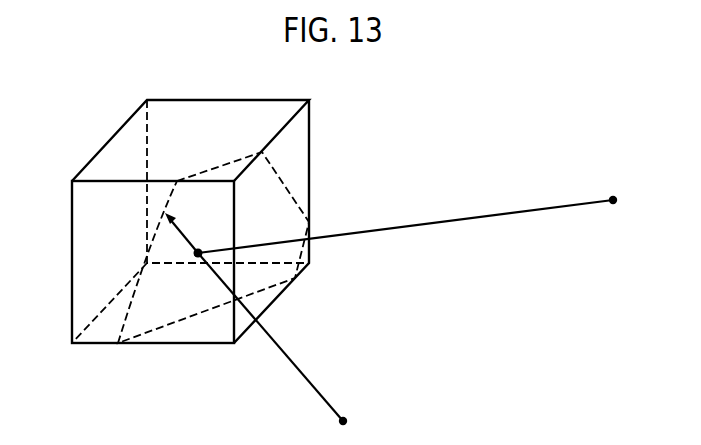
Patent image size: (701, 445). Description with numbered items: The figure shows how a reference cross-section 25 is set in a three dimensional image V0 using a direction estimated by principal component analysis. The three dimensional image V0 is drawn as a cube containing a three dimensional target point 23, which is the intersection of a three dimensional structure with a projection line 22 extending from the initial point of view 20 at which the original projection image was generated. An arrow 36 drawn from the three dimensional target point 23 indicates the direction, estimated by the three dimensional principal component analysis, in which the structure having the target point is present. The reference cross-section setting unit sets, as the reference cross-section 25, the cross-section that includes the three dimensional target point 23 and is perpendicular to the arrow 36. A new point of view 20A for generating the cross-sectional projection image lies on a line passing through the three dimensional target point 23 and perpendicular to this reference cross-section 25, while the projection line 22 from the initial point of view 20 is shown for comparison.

The three dimensional image V0 is at (170, 100).
The reference cross-section 25 is at (278, 173).
The arrow 36 is at (182, 235).
The projection line 22 is at (567, 203).
The point of view 20A is at (294, 344).
The point of view 20 is at (614, 205).
The three dimensional target point 23 is at (195, 258).